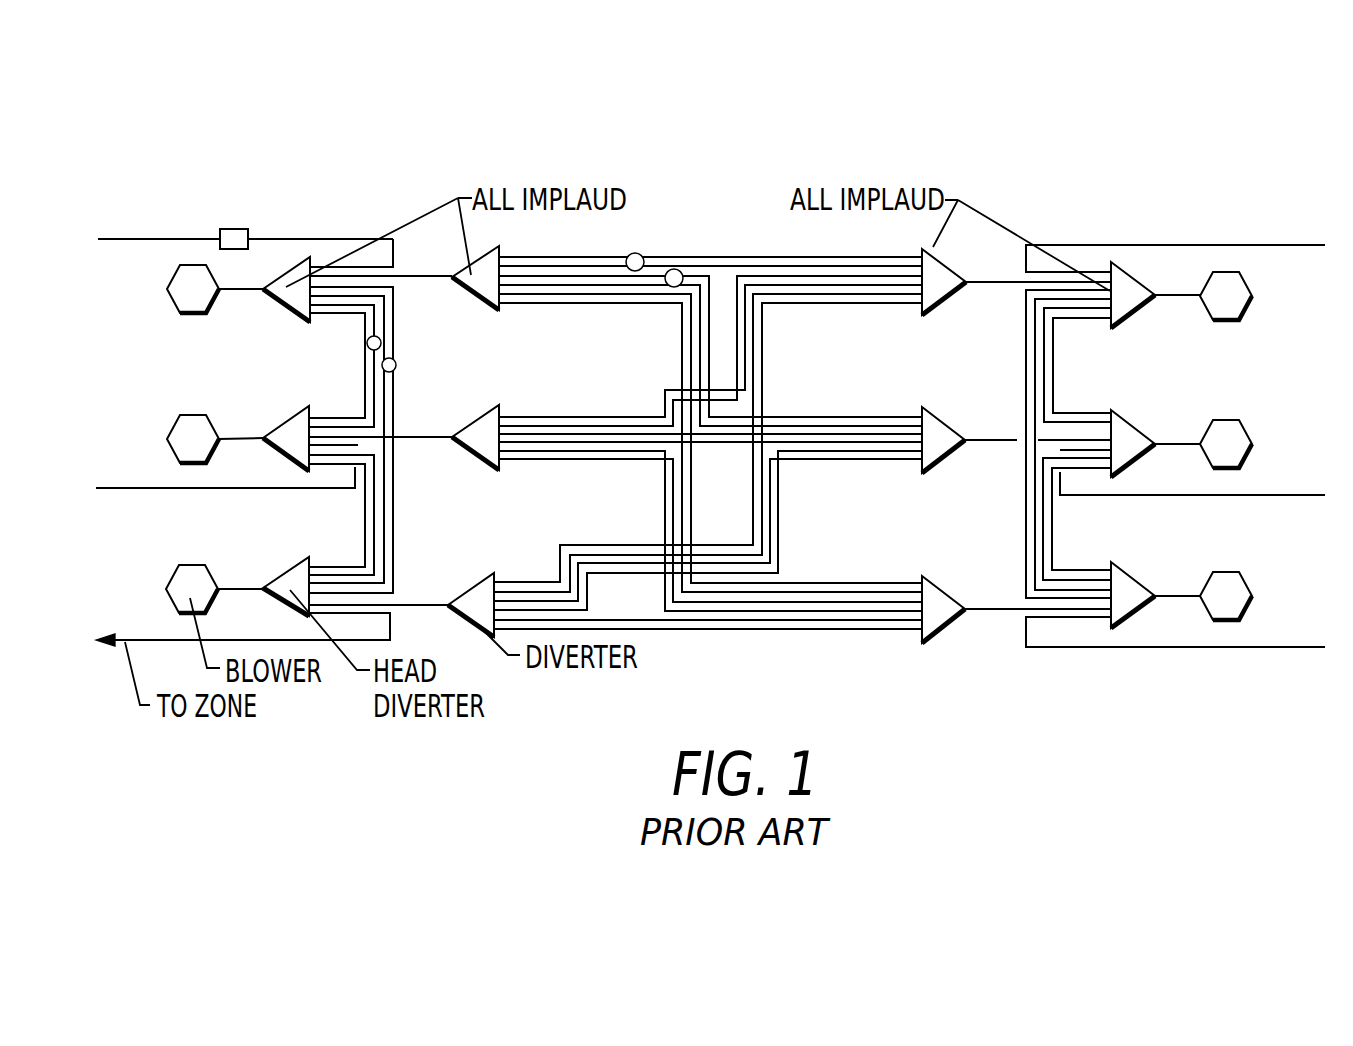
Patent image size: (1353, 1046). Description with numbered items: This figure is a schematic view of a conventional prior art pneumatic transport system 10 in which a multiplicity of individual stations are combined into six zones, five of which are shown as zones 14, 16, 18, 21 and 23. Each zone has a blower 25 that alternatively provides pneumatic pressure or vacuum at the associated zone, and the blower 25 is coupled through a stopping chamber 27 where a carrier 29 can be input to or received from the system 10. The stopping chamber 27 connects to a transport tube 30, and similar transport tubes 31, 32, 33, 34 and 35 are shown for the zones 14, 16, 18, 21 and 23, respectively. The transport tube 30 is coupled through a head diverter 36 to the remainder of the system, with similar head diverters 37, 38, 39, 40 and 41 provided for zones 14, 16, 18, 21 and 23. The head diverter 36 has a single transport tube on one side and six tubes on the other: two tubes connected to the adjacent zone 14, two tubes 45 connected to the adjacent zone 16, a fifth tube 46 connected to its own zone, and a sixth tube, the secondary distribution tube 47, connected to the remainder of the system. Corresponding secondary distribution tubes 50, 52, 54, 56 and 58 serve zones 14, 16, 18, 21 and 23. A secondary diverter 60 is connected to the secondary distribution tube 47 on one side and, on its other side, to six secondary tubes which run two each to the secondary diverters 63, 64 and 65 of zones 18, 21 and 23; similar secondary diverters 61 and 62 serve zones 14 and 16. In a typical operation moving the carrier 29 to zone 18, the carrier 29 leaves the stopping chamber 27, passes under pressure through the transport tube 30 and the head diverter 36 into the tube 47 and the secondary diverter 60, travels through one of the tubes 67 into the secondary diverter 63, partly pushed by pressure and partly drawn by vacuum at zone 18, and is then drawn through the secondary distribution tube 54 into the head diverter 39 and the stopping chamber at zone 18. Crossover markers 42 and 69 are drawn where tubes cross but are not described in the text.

The pneumatic transport system 10 is at (809, 160).
The zone 14 is at (150, 459).
The zone 16 is at (148, 608).
The zone 18 is at (1320, 268).
The zone 21 is at (1306, 405).
The zone 23 is at (1308, 548).
The blower 25 is at (185, 282).
The stopping chamber 27 is at (228, 222).
The carrier 29 is at (252, 237).
The transport tube 30 is at (278, 275).
The transport tube 31 is at (255, 436).
The transport tube 32 is at (247, 585).
The transport tube 33 is at (1172, 288).
The transport tube 34 is at (1172, 443).
The transport tube 35 is at (1172, 594).
The head diverter 36 is at (300, 272).
The head diverter 37 is at (291, 421).
The head diverter 38 is at (292, 582).
The head diverter 39 is at (1135, 290).
The head diverter 40 is at (1118, 437).
The head diverter 41 is at (1141, 582).
The tube crossover 42 is at (367, 343).
The tubes 45 is at (396, 365).
The fifth tube 46 is at (360, 238).
The secondary distribution tube 47 is at (422, 280).
The secondary distribution tube 50 is at (418, 433).
The secondary distribution tube 52 is at (408, 600).
The secondary distribution tube 54 is at (992, 280).
The secondary distribution tube 56 is at (1003, 438).
The secondary distribution tube 58 is at (985, 605).
The secondary diverter 60 is at (481, 272).
The secondary diverter 61 is at (480, 430).
The secondary diverter 62 is at (477, 598).
The secondary diverter 63 is at (940, 272).
The secondary diverter 64 is at (933, 433).
The secondary diverter 65 is at (935, 598).
The tubes 67 is at (639, 253).
The tube crossover 69 is at (677, 268).